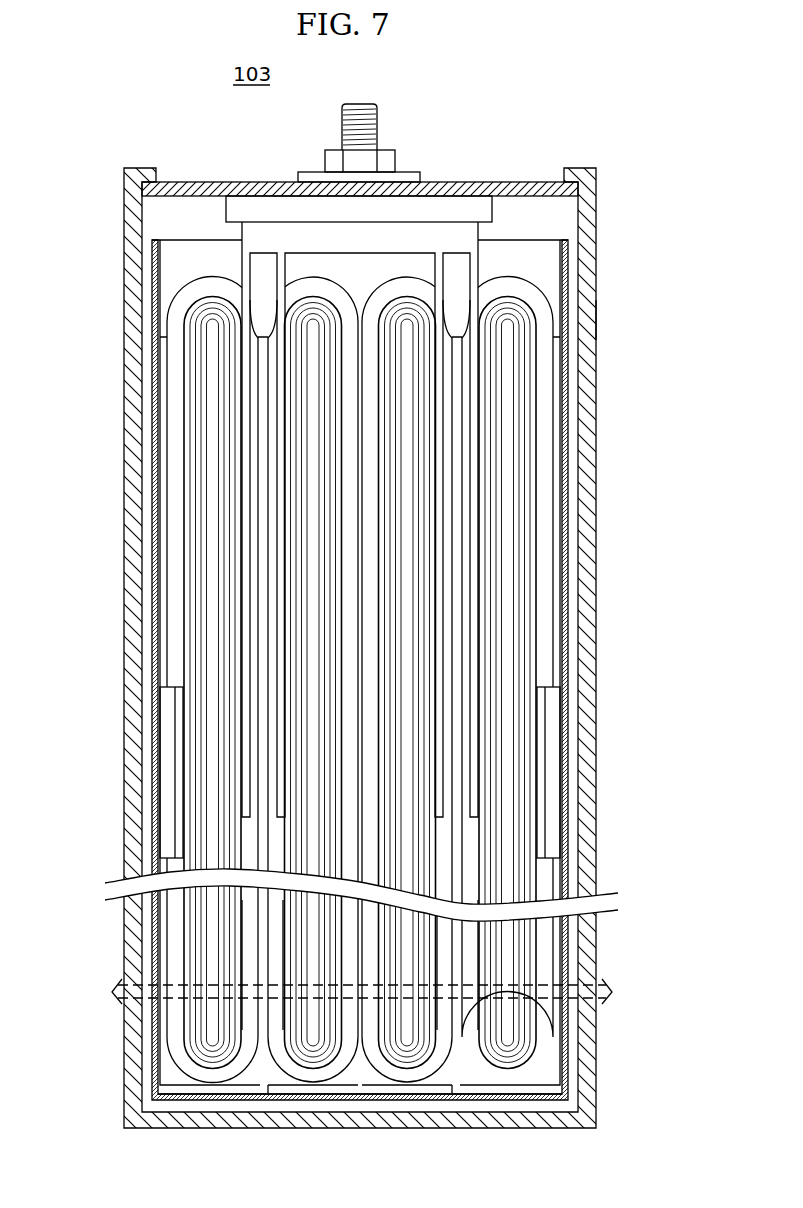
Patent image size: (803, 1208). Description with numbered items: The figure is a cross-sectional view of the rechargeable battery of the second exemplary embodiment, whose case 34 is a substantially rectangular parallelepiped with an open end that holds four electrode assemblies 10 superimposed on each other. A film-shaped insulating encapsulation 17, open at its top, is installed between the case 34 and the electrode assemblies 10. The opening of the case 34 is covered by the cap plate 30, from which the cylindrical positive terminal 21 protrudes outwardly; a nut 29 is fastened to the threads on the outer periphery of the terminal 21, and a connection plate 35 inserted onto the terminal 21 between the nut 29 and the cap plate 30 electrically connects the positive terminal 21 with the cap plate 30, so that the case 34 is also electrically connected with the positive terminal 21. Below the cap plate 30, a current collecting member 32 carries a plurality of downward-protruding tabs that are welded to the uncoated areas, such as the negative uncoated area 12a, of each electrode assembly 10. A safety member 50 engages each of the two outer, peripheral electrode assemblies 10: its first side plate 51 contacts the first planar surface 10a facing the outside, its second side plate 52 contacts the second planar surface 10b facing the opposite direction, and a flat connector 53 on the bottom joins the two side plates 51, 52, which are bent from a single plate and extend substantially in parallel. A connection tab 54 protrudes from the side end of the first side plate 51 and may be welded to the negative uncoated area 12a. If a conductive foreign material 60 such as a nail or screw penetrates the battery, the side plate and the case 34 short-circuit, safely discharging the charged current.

The electrode assembly 10 is at (304, 727).
The first planar surface 10a is at (166, 567).
The second planar surface 10b is at (270, 520).
The negative uncoated area 12a is at (178, 625).
The insulating encapsulation 17 is at (562, 582).
The positive terminal 21 is at (342, 128).
The nut 29 is at (387, 152).
The cap plate 30 is at (513, 186).
The current collecting member 32 is at (477, 232).
The case 34 is at (598, 318).
The connection plate 35 is at (412, 174).
The safety member 50 is at (150, 1056).
The first side plate 51 is at (154, 938).
The second side plate 52 is at (300, 1086).
The connector 53 is at (178, 1098).
The connection tab 54 is at (166, 775).
The conductive foreign material 60 is at (110, 991).